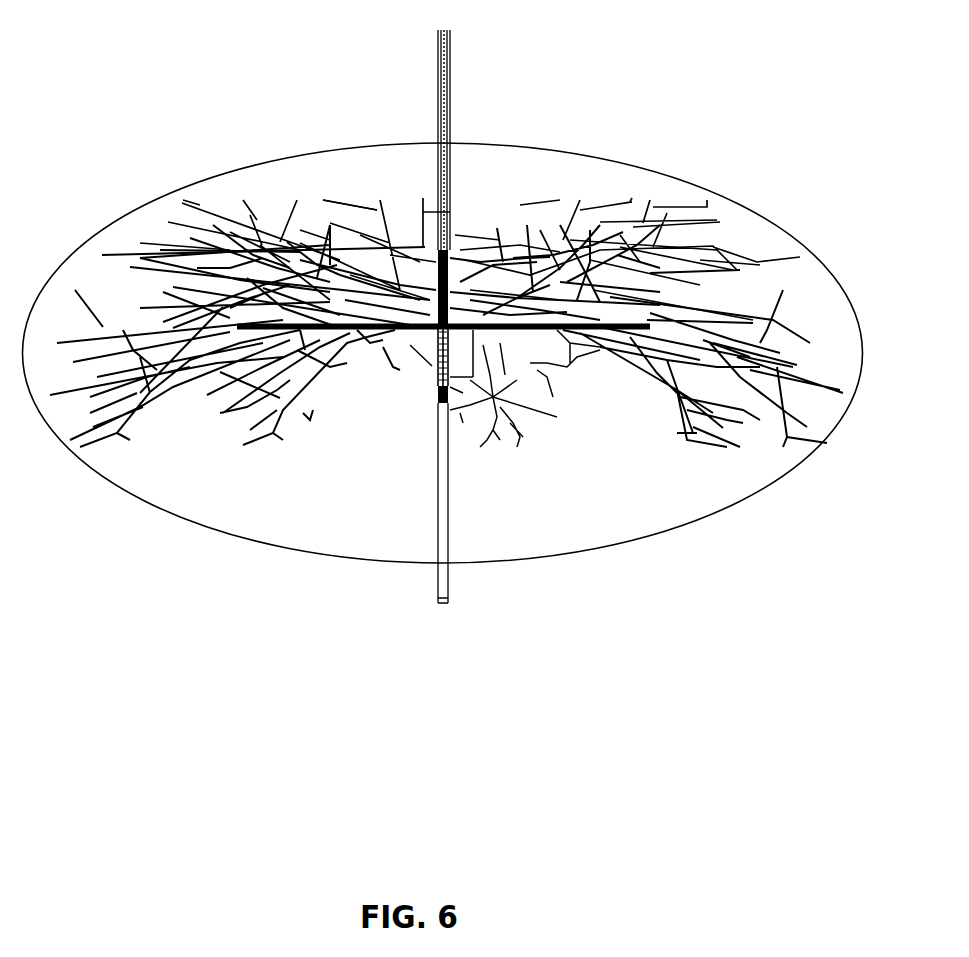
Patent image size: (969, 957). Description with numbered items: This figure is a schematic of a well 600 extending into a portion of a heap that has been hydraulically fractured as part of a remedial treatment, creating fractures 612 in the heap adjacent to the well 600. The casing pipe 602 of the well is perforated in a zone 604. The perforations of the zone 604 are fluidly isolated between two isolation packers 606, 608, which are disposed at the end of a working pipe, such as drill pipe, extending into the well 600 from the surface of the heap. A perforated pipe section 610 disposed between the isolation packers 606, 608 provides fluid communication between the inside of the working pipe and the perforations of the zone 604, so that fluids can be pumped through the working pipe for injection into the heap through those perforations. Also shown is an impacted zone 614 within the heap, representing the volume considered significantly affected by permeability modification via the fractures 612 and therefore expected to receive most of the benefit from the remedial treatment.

The well 600 is at (443, 522).
The casing pipe 602 is at (450, 117).
The zone 604 is at (488, 312).
The isolation packer 606 is at (455, 233).
The isolation packer 608 is at (435, 408).
The perforated pipe section 610 is at (432, 366).
The fractures 612 is at (362, 190).
The impacted zone 614 is at (622, 162).